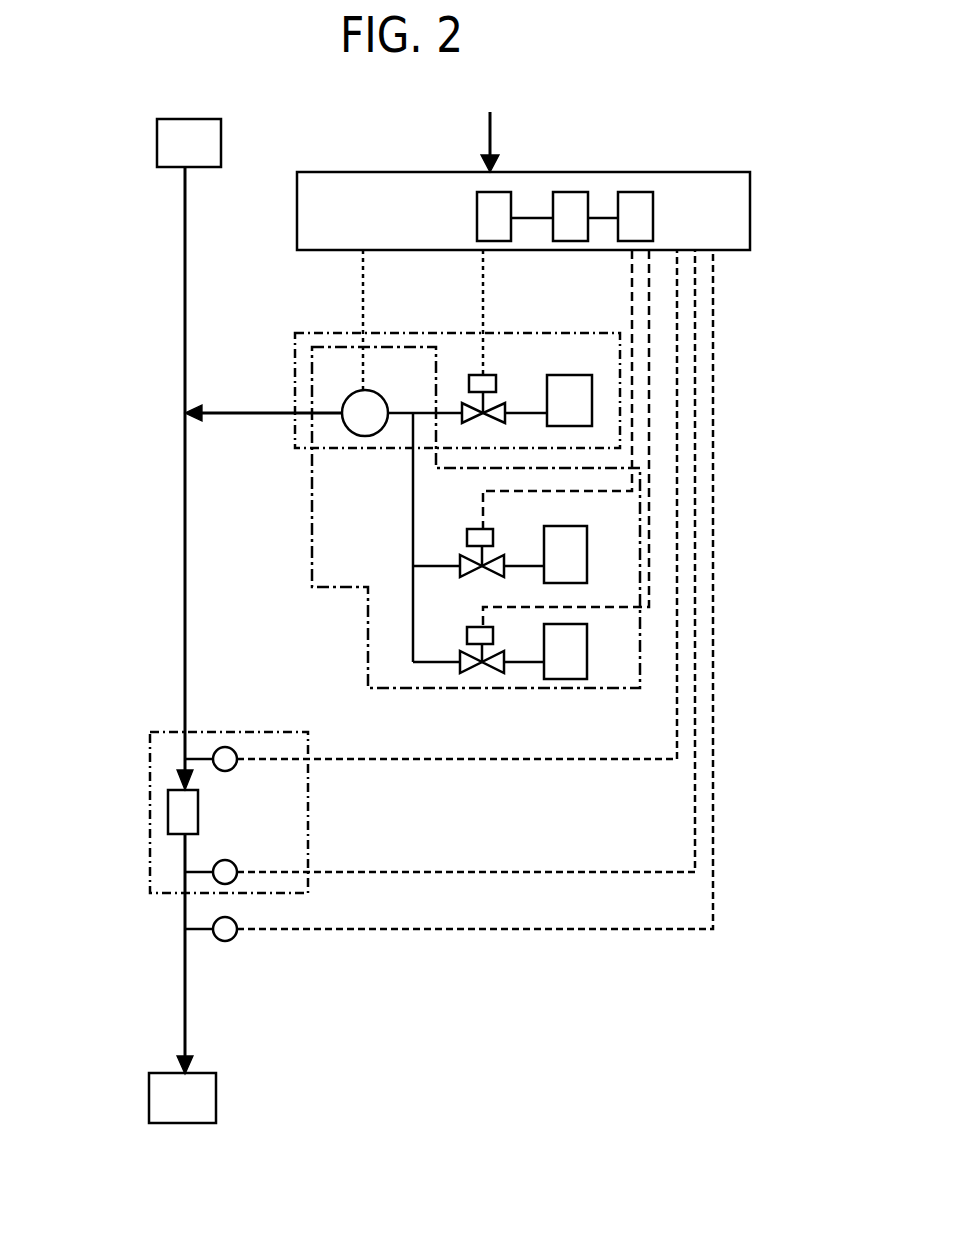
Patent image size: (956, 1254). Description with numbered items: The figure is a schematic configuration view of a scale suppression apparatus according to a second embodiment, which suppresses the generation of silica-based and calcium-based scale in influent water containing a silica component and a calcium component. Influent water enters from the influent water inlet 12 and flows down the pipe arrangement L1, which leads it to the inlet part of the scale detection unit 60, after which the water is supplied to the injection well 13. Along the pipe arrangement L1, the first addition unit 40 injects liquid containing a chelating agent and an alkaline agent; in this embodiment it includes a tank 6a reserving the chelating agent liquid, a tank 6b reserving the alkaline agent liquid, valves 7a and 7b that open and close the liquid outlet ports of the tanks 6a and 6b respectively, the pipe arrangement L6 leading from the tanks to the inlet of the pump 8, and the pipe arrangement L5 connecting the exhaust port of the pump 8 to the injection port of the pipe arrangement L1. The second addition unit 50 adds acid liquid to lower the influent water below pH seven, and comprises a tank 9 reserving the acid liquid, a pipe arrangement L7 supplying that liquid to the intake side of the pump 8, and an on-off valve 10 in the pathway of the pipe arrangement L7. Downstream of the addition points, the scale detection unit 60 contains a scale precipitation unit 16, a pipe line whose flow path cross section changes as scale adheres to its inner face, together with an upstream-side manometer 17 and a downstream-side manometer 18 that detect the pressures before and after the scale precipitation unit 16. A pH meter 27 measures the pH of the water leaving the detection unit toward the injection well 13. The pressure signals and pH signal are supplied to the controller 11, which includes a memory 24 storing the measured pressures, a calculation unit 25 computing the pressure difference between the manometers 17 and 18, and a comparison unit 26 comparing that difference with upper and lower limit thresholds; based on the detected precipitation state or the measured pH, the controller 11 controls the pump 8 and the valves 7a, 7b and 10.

The controller 11 is at (438, 172).
The memory 24 is at (507, 190).
The calculation unit 25 is at (578, 192).
The comparison unit 26 is at (635, 192).
The influent water inlet 12 is at (221, 146).
The injection well 13 is at (149, 1092).
The pipe arrangement L1 is at (182, 259).
The pipe arrangement L5 is at (317, 406).
The pipe arrangement L6 is at (412, 528).
The pipe arrangement L7 is at (518, 415).
The second addition unit 50 is at (498, 333).
The pump 8 is at (378, 390).
The on-off valve 10 is at (493, 373).
The tank 9 is at (575, 377).
The first addition unit 40 is at (310, 496).
The valve 7a is at (493, 538).
The valve 7b is at (467, 633).
The tank 6a is at (587, 566).
The tank 6b is at (587, 662).
The scale detection unit 60 is at (150, 783).
The scale precipitation unit 16 is at (198, 812).
The upstream-side manometer 17 is at (233, 768).
The downstream-side manometer 18 is at (237, 857).
The pH meter 27 is at (237, 920).